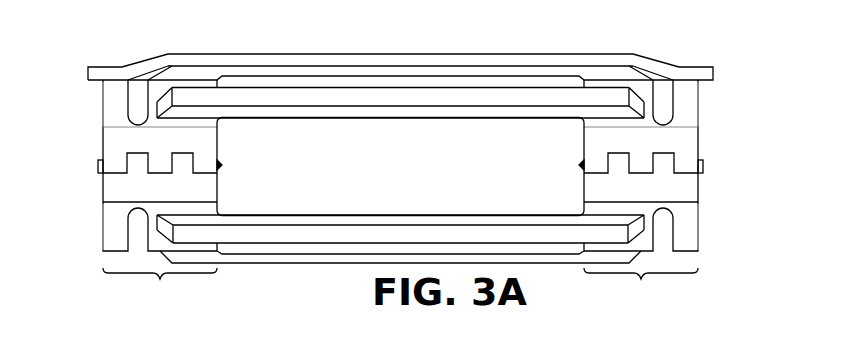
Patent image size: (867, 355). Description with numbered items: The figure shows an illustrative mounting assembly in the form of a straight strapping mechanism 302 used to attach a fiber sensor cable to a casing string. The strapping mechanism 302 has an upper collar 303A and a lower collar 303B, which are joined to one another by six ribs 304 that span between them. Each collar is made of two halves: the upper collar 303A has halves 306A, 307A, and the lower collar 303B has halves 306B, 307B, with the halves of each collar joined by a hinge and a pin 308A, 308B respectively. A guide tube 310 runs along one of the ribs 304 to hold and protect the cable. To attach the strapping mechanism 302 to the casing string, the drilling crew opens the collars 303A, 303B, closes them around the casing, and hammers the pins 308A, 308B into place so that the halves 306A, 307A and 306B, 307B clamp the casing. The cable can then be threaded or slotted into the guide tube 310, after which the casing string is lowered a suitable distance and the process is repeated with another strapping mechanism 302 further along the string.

The straight strapping mechanism 302 is at (756, 84).
The upper collar 303A is at (372, 192).
The lower collar 303B is at (638, 192).
The ribs 304 is at (367, 232).
The collar half 306A is at (103, 202).
The collar half 306B is at (700, 193).
The collar half 307A is at (103, 146).
The collar half 307B is at (700, 133).
The pin 308A is at (98, 166).
The pin 308B is at (703, 165).
The guide tube 310 is at (520, 57).